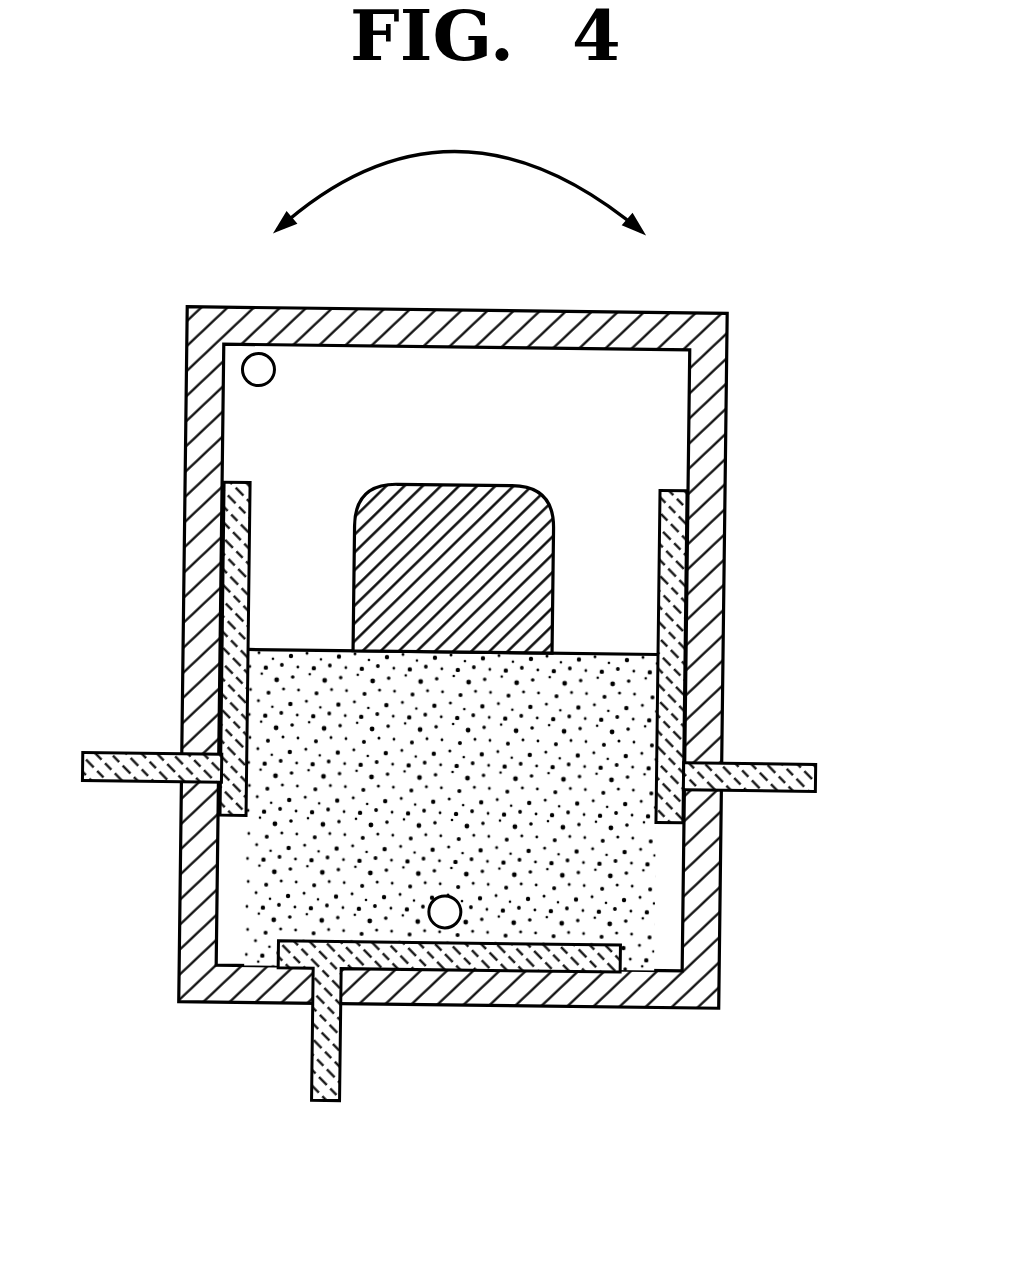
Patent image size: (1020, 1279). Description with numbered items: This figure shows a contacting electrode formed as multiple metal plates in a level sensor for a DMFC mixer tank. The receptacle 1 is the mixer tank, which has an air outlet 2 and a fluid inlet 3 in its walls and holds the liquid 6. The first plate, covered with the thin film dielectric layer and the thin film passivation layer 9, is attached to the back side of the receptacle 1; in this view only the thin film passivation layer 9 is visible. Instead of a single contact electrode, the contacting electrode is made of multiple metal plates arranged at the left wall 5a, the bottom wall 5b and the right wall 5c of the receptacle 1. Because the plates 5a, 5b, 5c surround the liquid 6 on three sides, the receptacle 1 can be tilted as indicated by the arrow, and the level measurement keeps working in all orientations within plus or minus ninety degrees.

The receptacle 1 is at (205, 335).
The air outlet 2 is at (257, 369).
The fluid inlet 3 is at (440, 911).
The metal plate 5a is at (236, 578).
The metal plate 5b is at (475, 945).
The metal plate 5c is at (673, 588).
The liquid 6 is at (265, 697).
The thin film passivation layer 9 is at (517, 562).